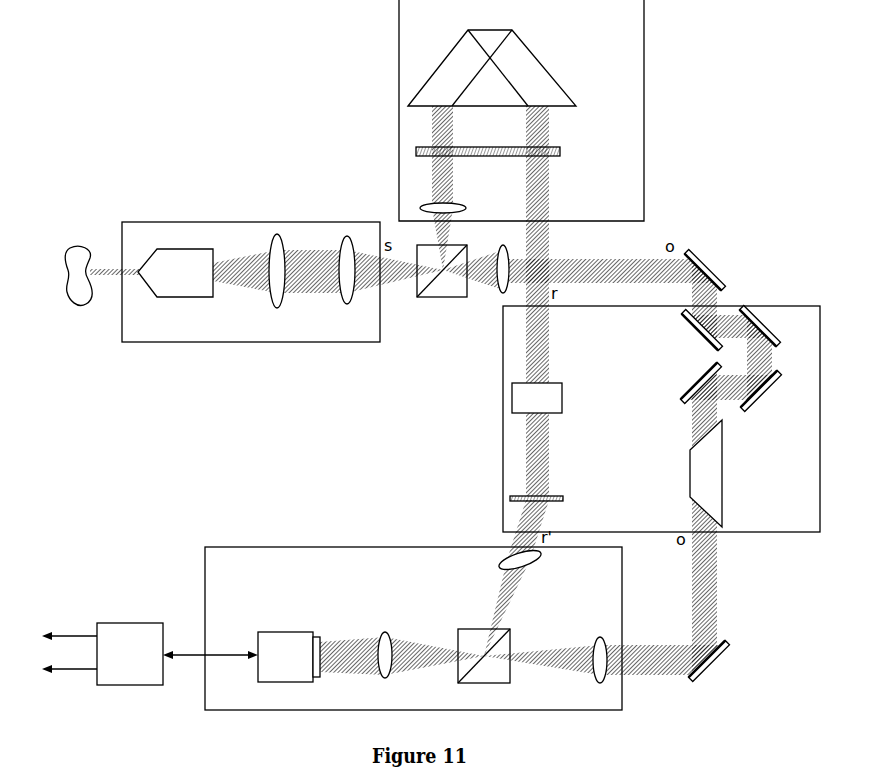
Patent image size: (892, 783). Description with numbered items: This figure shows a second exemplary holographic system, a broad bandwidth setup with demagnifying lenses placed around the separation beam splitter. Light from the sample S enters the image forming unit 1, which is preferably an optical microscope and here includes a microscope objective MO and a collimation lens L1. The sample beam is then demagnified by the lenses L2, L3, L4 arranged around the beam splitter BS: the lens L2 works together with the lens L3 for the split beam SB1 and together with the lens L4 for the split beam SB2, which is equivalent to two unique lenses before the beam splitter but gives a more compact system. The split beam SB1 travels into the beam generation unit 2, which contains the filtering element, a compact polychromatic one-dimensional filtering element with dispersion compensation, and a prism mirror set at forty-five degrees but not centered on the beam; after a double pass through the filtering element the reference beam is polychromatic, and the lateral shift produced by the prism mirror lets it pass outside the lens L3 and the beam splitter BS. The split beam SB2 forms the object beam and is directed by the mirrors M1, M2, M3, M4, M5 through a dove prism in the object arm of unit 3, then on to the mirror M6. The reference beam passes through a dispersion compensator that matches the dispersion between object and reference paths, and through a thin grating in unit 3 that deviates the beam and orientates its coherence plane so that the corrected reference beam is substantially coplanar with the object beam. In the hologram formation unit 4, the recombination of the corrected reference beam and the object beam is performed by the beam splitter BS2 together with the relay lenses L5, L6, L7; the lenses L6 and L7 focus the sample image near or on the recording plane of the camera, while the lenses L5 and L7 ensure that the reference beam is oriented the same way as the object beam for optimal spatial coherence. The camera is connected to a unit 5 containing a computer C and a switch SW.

The image forming unit 1 is at (254, 282).
The beam generation unit 2 is at (558, 248).
The unit 3 is at (661, 491).
The hologram formation unit 4 is at (472, 628).
The computer and switch unit 5 is at (141, 654).
The sample S is at (78, 275).
The microscope objective MO is at (175, 281).
The collimation lens L1 is at (280, 280).
The lens L2 is at (350, 281).
The lens L3 is at (455, 205).
The lens L4 is at (507, 277).
The lens L5 is at (532, 560).
The lens L6 is at (603, 669).
The lens L7 is at (389, 666).
The beam splitter BS is at (453, 260).
The beam splitter BS2 is at (484, 665).
The split beam 1 SB1 is at (447, 188).
The split beam 2 SB2 is at (610, 301).
The mirror M1 is at (709, 297).
The mirror M2 is at (700, 329).
The mirror M3 is at (764, 325).
The mirror M4 is at (764, 393).
The mirror M5 is at (700, 382).
The mirror M6 is at (714, 660).
The element camera is at (293, 665).
The computer C is at (129, 634).
The switch SW is at (130, 674).